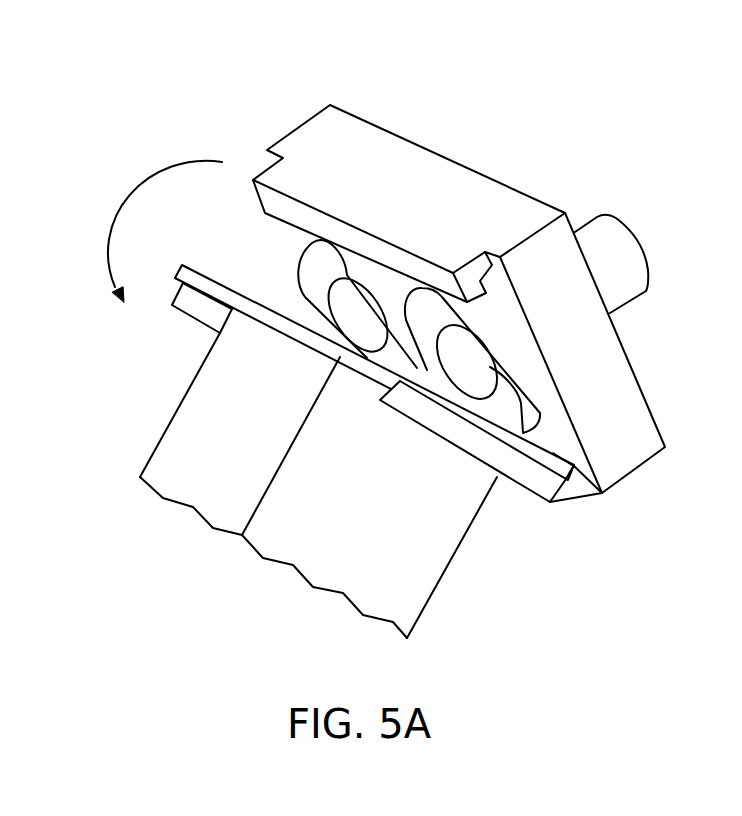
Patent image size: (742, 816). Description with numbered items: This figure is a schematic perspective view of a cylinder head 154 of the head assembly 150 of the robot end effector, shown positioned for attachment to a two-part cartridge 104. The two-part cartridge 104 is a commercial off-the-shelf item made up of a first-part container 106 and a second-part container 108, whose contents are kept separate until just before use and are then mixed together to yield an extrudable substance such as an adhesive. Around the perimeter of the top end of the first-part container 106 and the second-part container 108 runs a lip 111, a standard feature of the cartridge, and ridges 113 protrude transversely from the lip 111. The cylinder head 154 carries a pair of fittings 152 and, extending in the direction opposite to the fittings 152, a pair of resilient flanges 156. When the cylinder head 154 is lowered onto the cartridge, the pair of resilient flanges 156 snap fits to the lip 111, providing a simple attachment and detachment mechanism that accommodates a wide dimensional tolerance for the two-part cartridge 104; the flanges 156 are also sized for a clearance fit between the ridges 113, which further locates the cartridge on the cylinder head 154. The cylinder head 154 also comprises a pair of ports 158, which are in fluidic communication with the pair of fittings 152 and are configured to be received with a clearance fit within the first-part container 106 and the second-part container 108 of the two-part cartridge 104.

The two-part cartridge 104 is at (148, 460).
The first-part container 106 is at (177, 407).
The second-part container 108 is at (453, 560).
The lip 111 is at (185, 262).
The ridges 113 is at (175, 306).
The head assembly 150 is at (512, 147).
The pair of fittings 152 is at (626, 224).
The cylinder head 154 is at (349, 111).
The pair of resilient flanges 156 is at (368, 243).
The pair of ports 158 is at (299, 271).